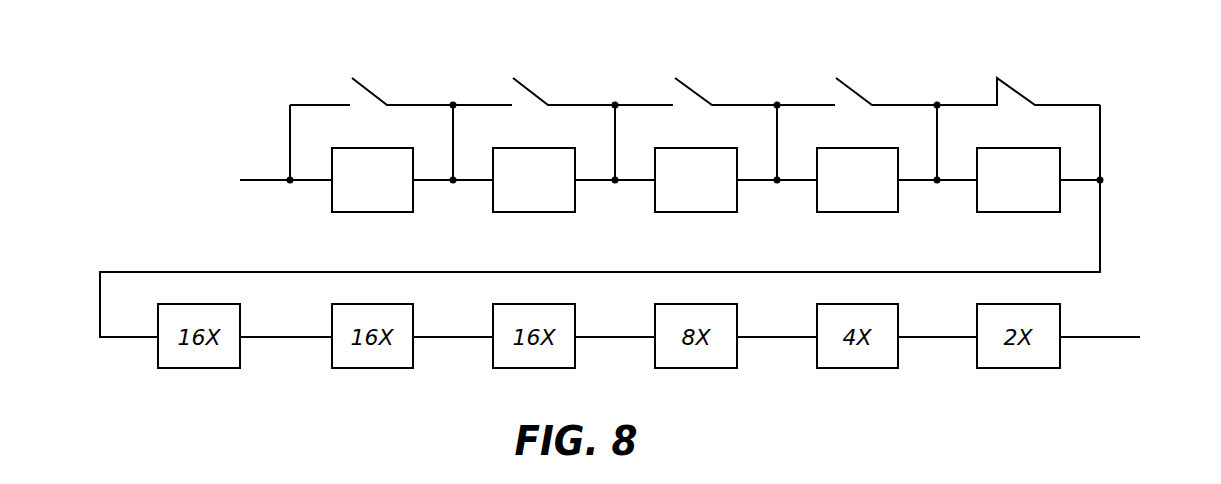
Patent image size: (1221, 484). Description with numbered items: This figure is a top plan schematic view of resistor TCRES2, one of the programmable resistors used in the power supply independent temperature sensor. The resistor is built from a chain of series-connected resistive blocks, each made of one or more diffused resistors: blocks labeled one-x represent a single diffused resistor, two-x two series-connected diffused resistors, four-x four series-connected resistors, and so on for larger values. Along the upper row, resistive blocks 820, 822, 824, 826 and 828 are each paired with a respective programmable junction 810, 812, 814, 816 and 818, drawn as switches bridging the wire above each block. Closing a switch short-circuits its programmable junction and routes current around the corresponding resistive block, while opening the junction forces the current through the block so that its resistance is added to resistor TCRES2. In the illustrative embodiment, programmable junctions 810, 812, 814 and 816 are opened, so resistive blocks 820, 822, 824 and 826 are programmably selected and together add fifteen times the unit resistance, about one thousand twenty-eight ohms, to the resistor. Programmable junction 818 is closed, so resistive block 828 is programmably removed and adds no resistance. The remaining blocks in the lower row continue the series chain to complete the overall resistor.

The programmable junction 810 is at (370, 88).
The programmable junction 812 is at (531, 88).
The programmable junction 814 is at (692, 88).
The programmable junction 816 is at (853, 88).
The programmable junction 818 is at (1014, 88).
The resistive block 820 is at (370, 212).
The resistive block 822 is at (533, 212).
The resistive block 824 is at (692, 212).
The resistive block 826 is at (853, 212).
The resistive block 828 is at (1015, 212).